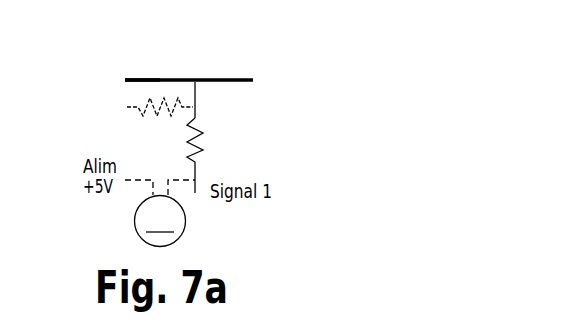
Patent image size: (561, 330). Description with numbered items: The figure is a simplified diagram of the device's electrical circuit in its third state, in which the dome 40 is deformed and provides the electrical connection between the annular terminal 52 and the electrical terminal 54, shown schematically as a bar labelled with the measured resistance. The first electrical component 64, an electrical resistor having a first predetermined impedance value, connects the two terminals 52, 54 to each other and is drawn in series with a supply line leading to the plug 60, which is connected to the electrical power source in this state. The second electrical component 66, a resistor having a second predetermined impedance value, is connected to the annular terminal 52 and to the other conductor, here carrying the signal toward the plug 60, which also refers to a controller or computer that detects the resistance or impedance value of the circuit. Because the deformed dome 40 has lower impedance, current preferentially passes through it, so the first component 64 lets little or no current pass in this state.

The dome 40 is at (208, 80).
The electrical terminal 54 is at (125, 80).
The annular terminal 52 is at (197, 86).
The first electrical component 64 is at (140, 104).
The second electrical component 66 is at (200, 152).
The electrical plug 60 is at (160, 213).